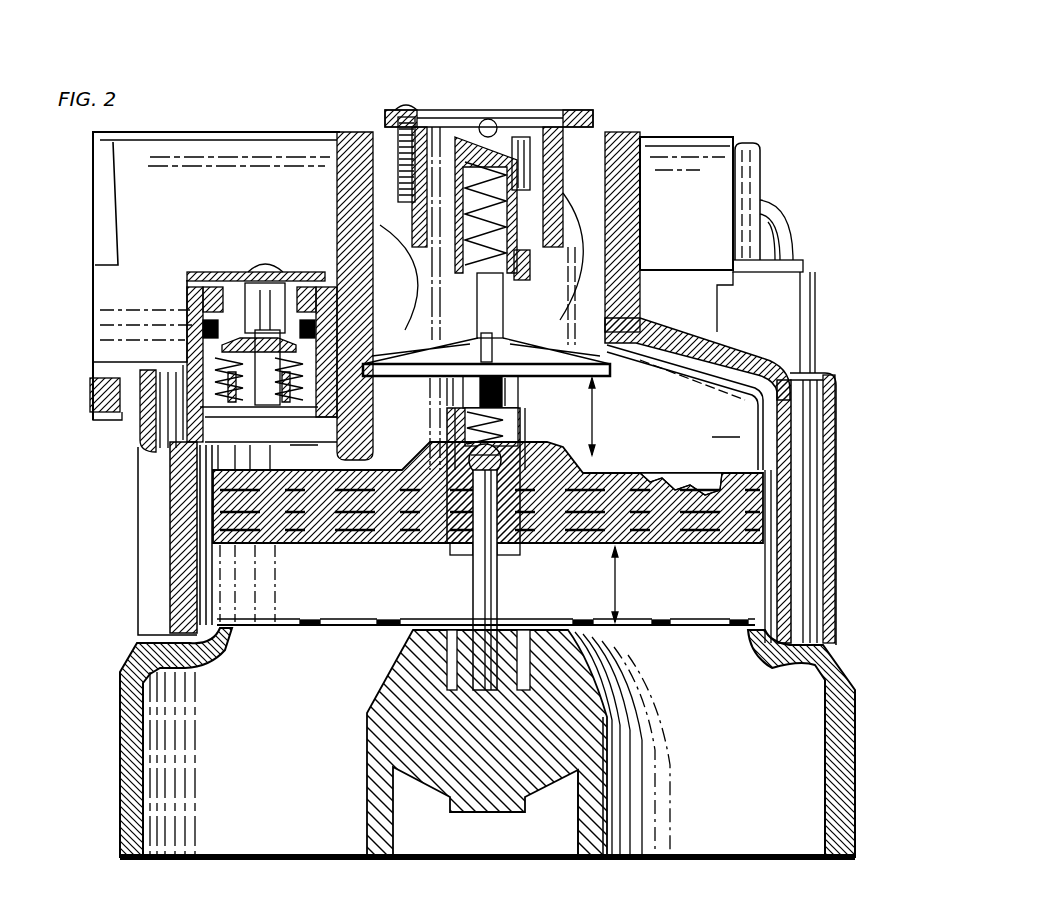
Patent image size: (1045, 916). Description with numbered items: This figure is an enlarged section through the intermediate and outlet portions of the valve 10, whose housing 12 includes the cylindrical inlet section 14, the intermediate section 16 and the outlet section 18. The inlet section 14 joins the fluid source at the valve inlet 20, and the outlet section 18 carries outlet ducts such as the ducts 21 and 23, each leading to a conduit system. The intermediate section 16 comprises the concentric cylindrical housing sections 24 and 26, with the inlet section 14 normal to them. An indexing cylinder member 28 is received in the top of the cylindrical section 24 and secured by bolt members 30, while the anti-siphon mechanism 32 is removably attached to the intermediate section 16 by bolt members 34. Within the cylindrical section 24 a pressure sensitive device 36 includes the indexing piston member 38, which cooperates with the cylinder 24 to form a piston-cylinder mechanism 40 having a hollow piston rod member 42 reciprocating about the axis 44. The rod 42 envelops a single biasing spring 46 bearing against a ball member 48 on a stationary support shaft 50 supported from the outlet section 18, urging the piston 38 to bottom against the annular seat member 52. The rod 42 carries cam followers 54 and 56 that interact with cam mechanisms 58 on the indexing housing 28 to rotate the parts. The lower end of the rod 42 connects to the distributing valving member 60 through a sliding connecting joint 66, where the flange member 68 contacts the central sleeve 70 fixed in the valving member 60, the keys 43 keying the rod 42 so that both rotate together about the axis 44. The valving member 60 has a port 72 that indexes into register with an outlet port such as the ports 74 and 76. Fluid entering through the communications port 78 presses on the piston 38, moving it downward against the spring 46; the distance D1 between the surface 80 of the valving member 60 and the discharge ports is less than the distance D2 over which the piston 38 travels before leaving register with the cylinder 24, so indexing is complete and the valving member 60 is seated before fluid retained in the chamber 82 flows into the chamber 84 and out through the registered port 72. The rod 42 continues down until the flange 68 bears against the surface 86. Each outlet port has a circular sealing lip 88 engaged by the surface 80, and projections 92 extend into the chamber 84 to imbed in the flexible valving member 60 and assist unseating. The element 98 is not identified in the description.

The valve 10 is at (728, 58).
The housing 12 is at (706, 137).
The cylindrical inlet section 14 is at (241, 132).
The intermediate section 16 is at (806, 465).
The outlet section 18 is at (845, 712).
The valve inlet 20 is at (92, 290).
The outlet duct 21 is at (858, 832).
The outlet duct 23 is at (120, 805).
The cylindrical housing section 24 is at (630, 225).
The cylindrical housing section 26 is at (170, 500).
The indexing cylinder member 28 is at (580, 115).
The bolt member 30 is at (407, 110).
The anti-siphon mechanism 32 is at (226, 273).
The bolt member 34 is at (258, 268).
The pressure sensitive device 36 is at (525, 380).
The piston member 38 is at (572, 360).
The piston-cylinder mechanism 40 is at (490, 124).
The piston rod member 42 is at (440, 118).
The keys 43 is at (448, 404).
The axis 44 is at (478, 590).
The biasing spring 46 is at (478, 163).
The ball member 48 is at (478, 455).
The stationary support shaft 50 is at (475, 632).
The annular seat member 52 is at (630, 393).
The cam follower 54 is at (525, 135).
The cam follower 56 is at (522, 268).
The cam mechanism 58 is at (438, 262).
The distributing valving member 60 is at (688, 545).
The sliding connecting joint 66 is at (530, 442).
The flange member 68 is at (535, 553).
The central sleeve 70 is at (530, 548).
The port 72 is at (718, 493).
The outlet port 74 is at (634, 640).
The outlet port 76 is at (340, 628).
The communications port 78 is at (575, 250).
The surface 80 is at (316, 545).
The cylindrical chamber 82 is at (630, 300).
The cylindrical chamber 84 is at (515, 429).
The surface 86 is at (519, 630).
The circular sealing lip 88 is at (420, 627).
The projections 92 is at (668, 627).
The cone 98 is at (460, 344).
The distance D1 is at (610, 584).
The distance D2 is at (585, 416).